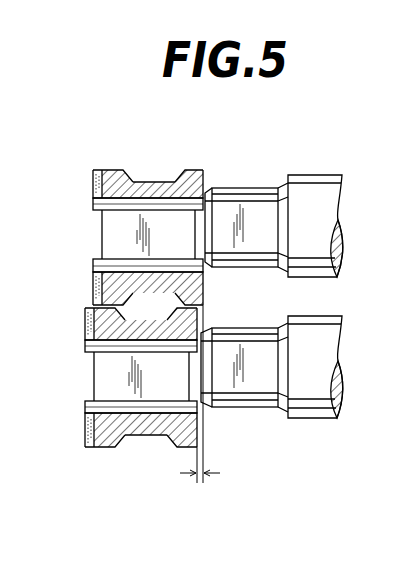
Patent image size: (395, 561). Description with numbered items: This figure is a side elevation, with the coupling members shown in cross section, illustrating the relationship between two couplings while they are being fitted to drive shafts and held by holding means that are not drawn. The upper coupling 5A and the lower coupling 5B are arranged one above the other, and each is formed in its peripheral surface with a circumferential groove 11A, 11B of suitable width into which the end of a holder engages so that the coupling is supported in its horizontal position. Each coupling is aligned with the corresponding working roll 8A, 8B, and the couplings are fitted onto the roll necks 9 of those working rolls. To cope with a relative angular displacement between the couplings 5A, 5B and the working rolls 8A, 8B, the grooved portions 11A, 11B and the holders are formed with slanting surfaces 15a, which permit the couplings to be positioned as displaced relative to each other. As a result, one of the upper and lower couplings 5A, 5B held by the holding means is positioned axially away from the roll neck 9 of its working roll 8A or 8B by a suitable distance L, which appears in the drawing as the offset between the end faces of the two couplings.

The upper coupling 5A is at (93, 188).
The lower coupling 5B is at (88, 428).
The slanting surfaces 15a is at (134, 170).
The circumferential groove 11A is at (157, 182).
The circumferential groove 11B is at (140, 436).
The roll neck 9 is at (246, 192).
The upper working roll 8A is at (313, 180).
The lower working roll 8B is at (313, 417).
The distance L is at (200, 483).